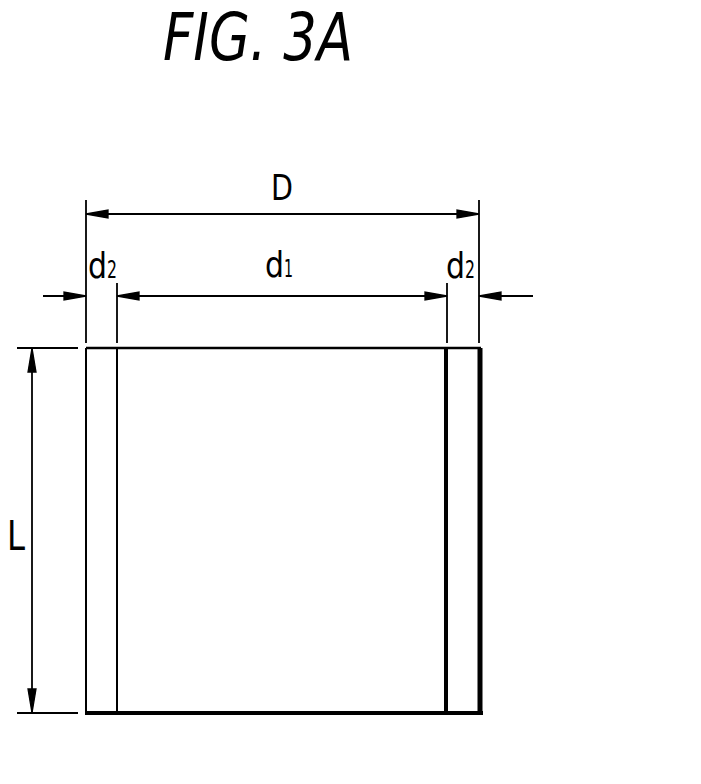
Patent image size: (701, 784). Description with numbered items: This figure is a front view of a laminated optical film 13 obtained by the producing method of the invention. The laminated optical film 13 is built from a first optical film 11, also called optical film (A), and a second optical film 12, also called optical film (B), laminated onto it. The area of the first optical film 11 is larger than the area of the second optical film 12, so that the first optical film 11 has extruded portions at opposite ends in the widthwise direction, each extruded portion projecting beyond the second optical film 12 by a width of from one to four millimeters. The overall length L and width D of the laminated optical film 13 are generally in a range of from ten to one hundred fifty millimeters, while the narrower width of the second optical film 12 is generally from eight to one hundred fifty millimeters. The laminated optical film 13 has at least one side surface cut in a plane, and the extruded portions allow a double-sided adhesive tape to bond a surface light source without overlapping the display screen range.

The first optical film 11 is at (468, 603).
The second optical film 12 is at (423, 502).
The laminated optical film 13 is at (593, 471).